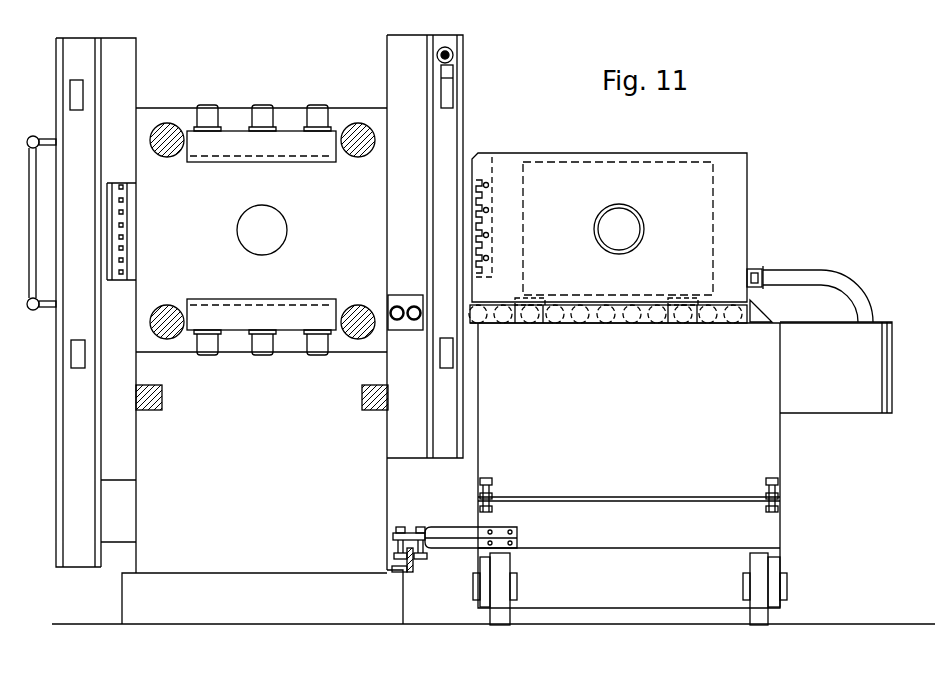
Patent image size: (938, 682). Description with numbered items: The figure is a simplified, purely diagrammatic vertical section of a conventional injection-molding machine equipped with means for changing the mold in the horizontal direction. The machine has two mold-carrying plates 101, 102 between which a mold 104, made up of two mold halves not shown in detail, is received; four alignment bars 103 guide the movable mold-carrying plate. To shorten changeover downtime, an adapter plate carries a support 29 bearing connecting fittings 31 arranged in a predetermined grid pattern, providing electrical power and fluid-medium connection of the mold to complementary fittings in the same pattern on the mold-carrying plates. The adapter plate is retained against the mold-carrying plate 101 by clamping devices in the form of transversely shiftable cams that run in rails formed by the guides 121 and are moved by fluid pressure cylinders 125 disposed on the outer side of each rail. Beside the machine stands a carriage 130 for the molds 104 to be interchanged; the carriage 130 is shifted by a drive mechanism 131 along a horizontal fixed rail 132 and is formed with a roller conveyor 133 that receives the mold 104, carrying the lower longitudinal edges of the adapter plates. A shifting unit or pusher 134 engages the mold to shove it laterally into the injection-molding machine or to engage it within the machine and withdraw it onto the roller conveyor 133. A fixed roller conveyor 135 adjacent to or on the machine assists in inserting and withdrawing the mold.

The support 29 is at (490, 175).
The connecting fittings 31 is at (124, 238).
The mold-carrying plate 101 is at (234, 116).
The mold-carrying plate 102 is at (510, 170).
The alignment bars 103 is at (172, 125).
The mold 104 is at (585, 170).
The guides 121 is at (242, 140).
The fluid pressure cylinders 125 is at (314, 107).
The carriage 130 is at (758, 448).
The drive mechanism 131 is at (403, 527).
The horizontal fixed rail 132 is at (414, 566).
The roller conveyor 133 is at (605, 322).
The shifting unit or pusher 134 is at (830, 335).
The fixed roller conveyor 135 is at (414, 306).